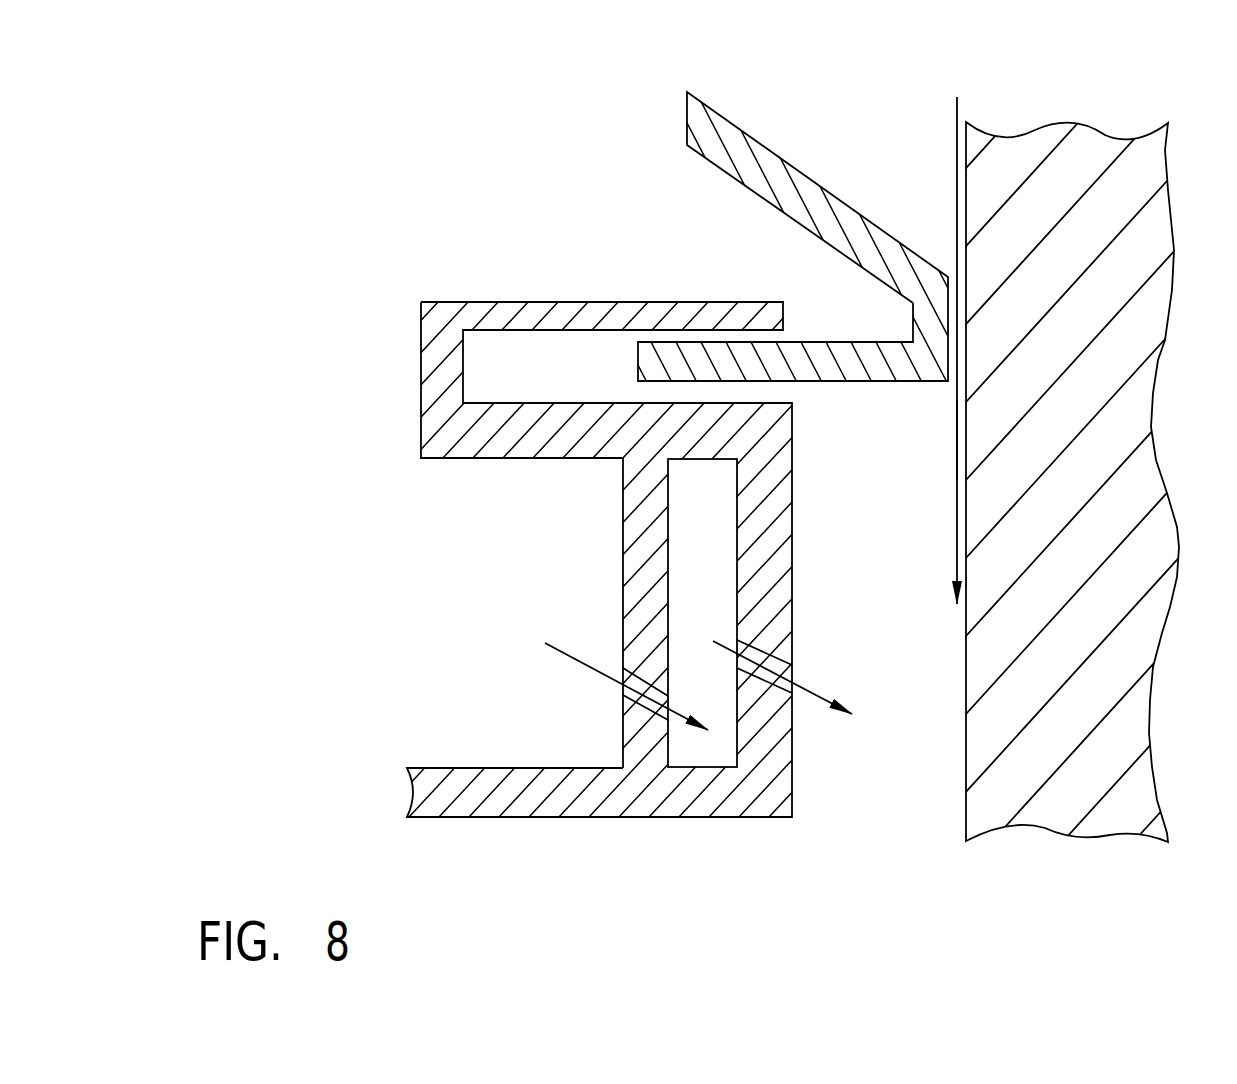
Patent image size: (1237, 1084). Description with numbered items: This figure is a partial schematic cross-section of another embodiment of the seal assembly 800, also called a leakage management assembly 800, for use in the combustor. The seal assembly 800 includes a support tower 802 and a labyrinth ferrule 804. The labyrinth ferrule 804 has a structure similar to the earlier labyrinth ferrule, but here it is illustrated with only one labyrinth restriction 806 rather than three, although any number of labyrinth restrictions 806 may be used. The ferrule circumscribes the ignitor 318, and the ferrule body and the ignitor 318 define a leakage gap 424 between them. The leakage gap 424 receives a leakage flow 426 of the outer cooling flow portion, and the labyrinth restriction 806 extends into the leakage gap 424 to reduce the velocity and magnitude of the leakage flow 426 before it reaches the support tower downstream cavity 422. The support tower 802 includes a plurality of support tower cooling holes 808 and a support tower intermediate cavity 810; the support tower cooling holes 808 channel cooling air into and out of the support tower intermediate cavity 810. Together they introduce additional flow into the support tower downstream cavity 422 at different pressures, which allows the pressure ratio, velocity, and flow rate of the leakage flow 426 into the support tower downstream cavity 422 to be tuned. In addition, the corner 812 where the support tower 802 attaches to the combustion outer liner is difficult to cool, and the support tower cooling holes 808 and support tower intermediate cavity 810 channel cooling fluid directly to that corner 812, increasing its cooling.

The seal assembly 800 is at (665, 113).
The support tower 802 is at (768, 540).
The labyrinth ferrule 804 is at (722, 170).
The labyrinth restriction 806 is at (946, 313).
The support tower cooling holes 808 is at (620, 695).
The support tower intermediate cavity 810 is at (727, 561).
The corner 812 is at (768, 803).
The ignitor 318 is at (1093, 145).
The support tower downstream cavity 422 is at (903, 574).
The leakage gap 424 is at (886, 137).
The leakage flow 426 is at (957, 437).